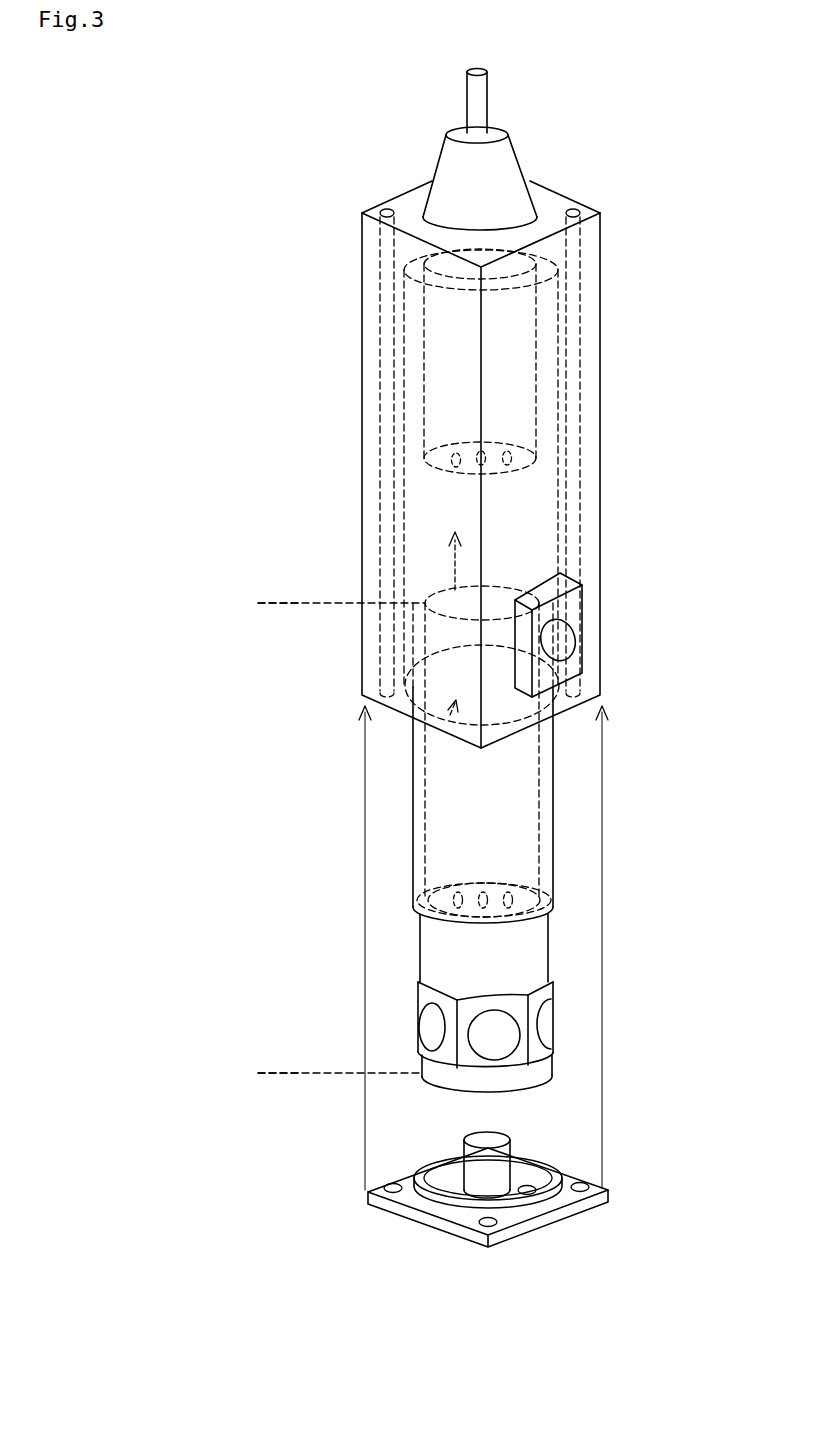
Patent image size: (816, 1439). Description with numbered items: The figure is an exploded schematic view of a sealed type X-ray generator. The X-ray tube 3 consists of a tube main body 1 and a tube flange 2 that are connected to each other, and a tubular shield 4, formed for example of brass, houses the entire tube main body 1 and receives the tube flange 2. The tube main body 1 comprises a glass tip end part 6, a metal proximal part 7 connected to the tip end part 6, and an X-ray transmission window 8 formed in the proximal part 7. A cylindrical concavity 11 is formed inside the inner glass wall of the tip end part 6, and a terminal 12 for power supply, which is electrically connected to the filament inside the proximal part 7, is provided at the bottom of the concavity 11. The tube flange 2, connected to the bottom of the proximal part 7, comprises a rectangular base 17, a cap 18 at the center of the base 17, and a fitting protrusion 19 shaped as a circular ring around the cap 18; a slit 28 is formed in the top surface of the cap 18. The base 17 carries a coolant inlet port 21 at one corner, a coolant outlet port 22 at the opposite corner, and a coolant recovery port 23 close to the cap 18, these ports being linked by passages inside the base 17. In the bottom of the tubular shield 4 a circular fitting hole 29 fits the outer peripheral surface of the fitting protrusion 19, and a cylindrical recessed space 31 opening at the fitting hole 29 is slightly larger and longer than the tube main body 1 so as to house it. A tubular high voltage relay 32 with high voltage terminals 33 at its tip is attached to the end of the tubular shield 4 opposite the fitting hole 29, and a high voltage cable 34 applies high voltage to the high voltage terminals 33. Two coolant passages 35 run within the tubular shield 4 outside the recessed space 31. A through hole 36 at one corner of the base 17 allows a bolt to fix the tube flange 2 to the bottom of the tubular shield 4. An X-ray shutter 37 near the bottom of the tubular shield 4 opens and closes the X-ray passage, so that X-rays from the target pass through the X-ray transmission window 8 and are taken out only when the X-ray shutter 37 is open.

The tube main body 1 is at (256, 593).
The tube flange 2 is at (257, 1082).
The X-ray tube 3 is at (204, 817).
The tubular shield 4 is at (286, 177).
The tip end part 6 is at (413, 822).
The proximal part 7 is at (428, 947).
The X-ray transmission window 8 is at (430, 1028).
The concavity 11 is at (503, 798).
The terminal 12 is at (466, 892).
The base 17 is at (450, 1227).
The cap 18 is at (447, 1172).
The fitting protrusion 19 is at (553, 1170).
The coolant inlet port 21 is at (398, 1180).
The coolant outlet port 22 is at (592, 1180).
The coolant recovery port 23 is at (525, 1187).
The slit 28 is at (487, 1140).
The fitting hole 29 is at (442, 727).
The recessed space 31 is at (538, 490).
The high voltage relay 32 is at (513, 338).
The high voltage terminals 33 is at (458, 468).
The high voltage cable 34 is at (481, 103).
The coolant passages 35 is at (393, 404).
The through hole 36 is at (508, 1222).
The X-ray shutter 37 is at (560, 641).